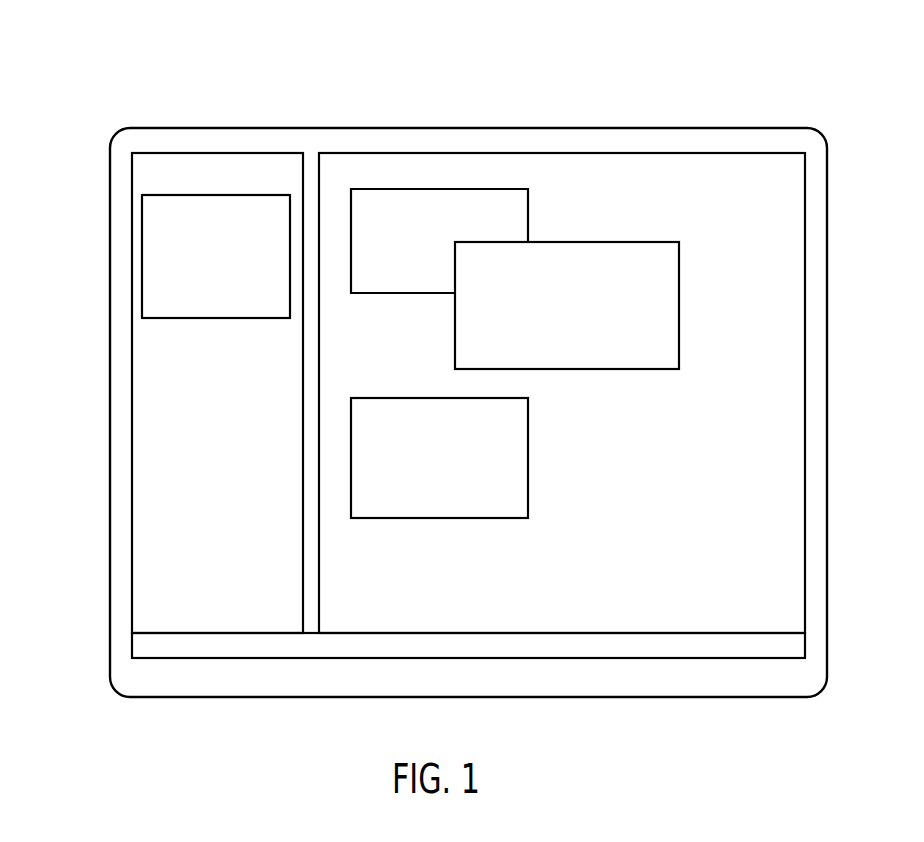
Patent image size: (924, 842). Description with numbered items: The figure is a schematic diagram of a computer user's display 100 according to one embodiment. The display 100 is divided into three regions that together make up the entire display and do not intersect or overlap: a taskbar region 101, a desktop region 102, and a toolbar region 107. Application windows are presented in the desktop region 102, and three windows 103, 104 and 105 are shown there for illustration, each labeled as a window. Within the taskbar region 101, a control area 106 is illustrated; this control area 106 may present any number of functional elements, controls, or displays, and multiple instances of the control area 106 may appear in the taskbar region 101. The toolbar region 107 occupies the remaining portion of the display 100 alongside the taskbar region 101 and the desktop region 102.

The display 100 is at (234, 78).
The taskbar region 101 is at (141, 466).
The desktop region 102 is at (748, 462).
The window 103 is at (473, 188).
The window 104 is at (615, 242).
The window 105 is at (529, 433).
The control area 106 is at (141, 237).
The toolbar region 107 is at (190, 686).